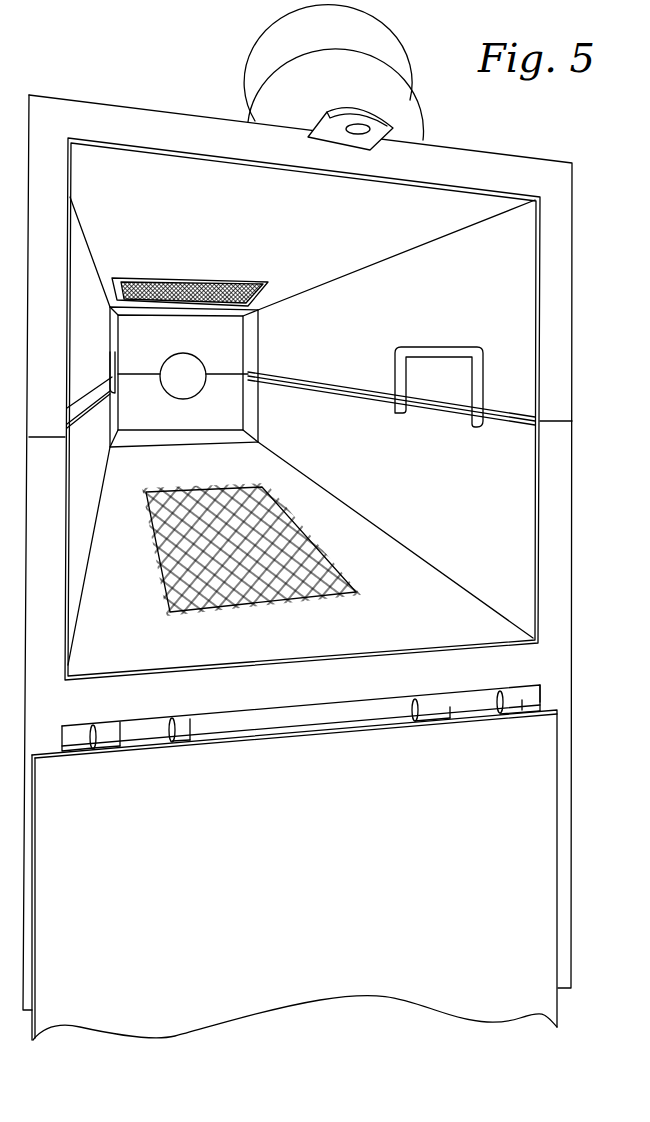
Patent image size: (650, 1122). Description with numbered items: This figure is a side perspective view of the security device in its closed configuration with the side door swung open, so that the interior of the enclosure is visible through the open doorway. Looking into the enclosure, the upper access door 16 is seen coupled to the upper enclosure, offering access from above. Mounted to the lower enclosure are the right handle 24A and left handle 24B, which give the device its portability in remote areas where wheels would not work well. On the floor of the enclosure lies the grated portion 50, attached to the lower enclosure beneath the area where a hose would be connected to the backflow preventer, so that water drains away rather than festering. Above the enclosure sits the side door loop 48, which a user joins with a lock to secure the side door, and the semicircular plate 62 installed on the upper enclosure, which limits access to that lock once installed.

The semicircular plate 62 is at (293, 102).
The side door loop 48 is at (384, 104).
The upper access door 16 is at (222, 293).
The left handle 24B is at (118, 358).
The right handle 24A is at (432, 346).
The grated portion 50 is at (320, 548).